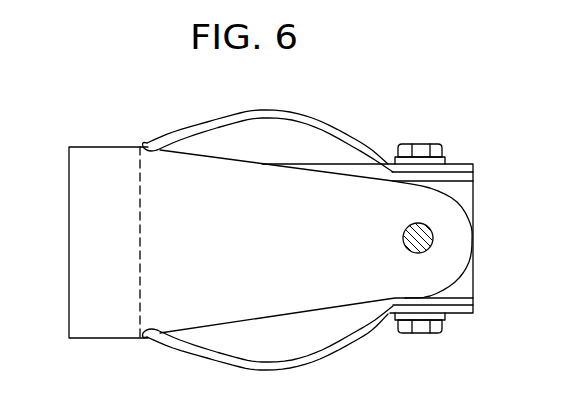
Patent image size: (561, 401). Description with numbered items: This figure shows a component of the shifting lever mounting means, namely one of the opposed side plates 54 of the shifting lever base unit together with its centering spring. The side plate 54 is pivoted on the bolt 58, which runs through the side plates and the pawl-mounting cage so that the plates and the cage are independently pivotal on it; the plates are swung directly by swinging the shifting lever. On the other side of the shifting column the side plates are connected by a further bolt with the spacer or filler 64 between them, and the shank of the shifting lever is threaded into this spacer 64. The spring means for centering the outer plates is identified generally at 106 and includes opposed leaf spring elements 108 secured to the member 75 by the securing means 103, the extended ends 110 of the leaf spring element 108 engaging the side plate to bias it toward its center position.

The side plate 54 is at (281, 306).
The bolt 58 is at (433, 238).
The spacer 64 is at (89, 162).
The member 75 is at (455, 196).
The securing means 103 is at (437, 144).
The centering spring means 106 is at (271, 129).
The leaf spring element 108 is at (274, 108).
The extended end 110 is at (162, 341).